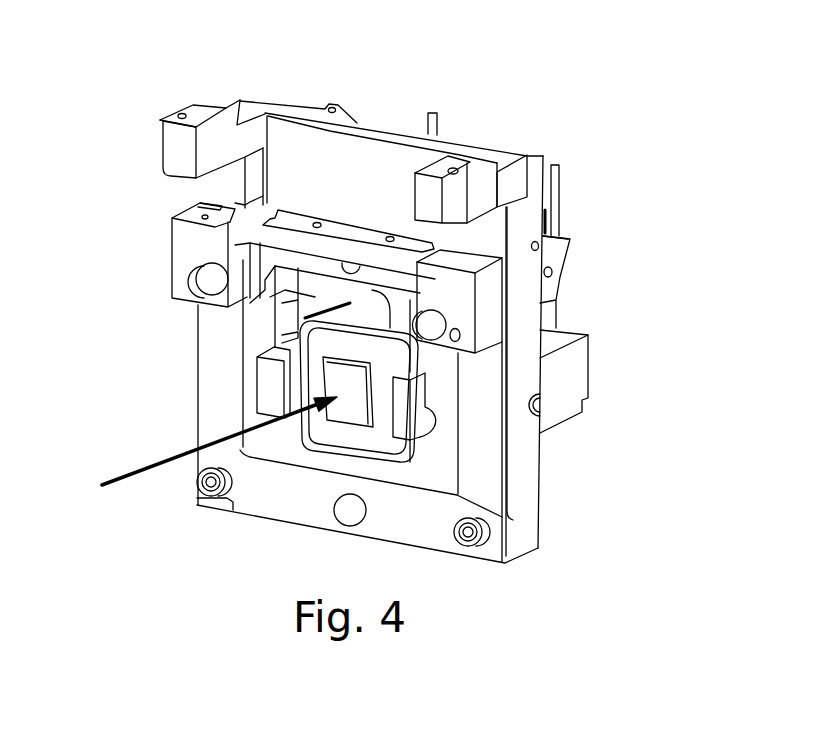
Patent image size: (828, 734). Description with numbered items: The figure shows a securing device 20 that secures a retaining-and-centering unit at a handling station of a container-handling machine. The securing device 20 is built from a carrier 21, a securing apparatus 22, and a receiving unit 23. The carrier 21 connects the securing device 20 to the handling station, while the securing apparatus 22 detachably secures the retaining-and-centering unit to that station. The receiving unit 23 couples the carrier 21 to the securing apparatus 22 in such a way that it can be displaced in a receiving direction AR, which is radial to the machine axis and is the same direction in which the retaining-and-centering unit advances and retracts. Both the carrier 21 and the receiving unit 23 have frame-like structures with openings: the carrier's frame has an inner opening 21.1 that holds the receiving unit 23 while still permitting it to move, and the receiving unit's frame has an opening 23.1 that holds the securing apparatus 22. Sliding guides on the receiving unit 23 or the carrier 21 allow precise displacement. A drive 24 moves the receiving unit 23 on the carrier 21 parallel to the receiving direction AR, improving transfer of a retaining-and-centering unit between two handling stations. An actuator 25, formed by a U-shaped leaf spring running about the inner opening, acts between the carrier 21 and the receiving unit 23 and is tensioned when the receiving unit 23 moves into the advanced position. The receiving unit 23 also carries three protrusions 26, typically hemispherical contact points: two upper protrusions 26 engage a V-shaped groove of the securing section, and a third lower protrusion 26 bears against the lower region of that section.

The securing device 20 is at (574, 106).
The carrier 21 is at (520, 282).
The inner opening 21.1 is at (238, 390).
The securing apparatus 22 is at (350, 407).
The receiving unit 23 is at (490, 299).
The opening 23.1 is at (296, 290).
The drive 24 is at (553, 408).
The actuator 25 is at (482, 457).
The protrusions 26 is at (205, 282).
The receiving direction AR is at (197, 449).